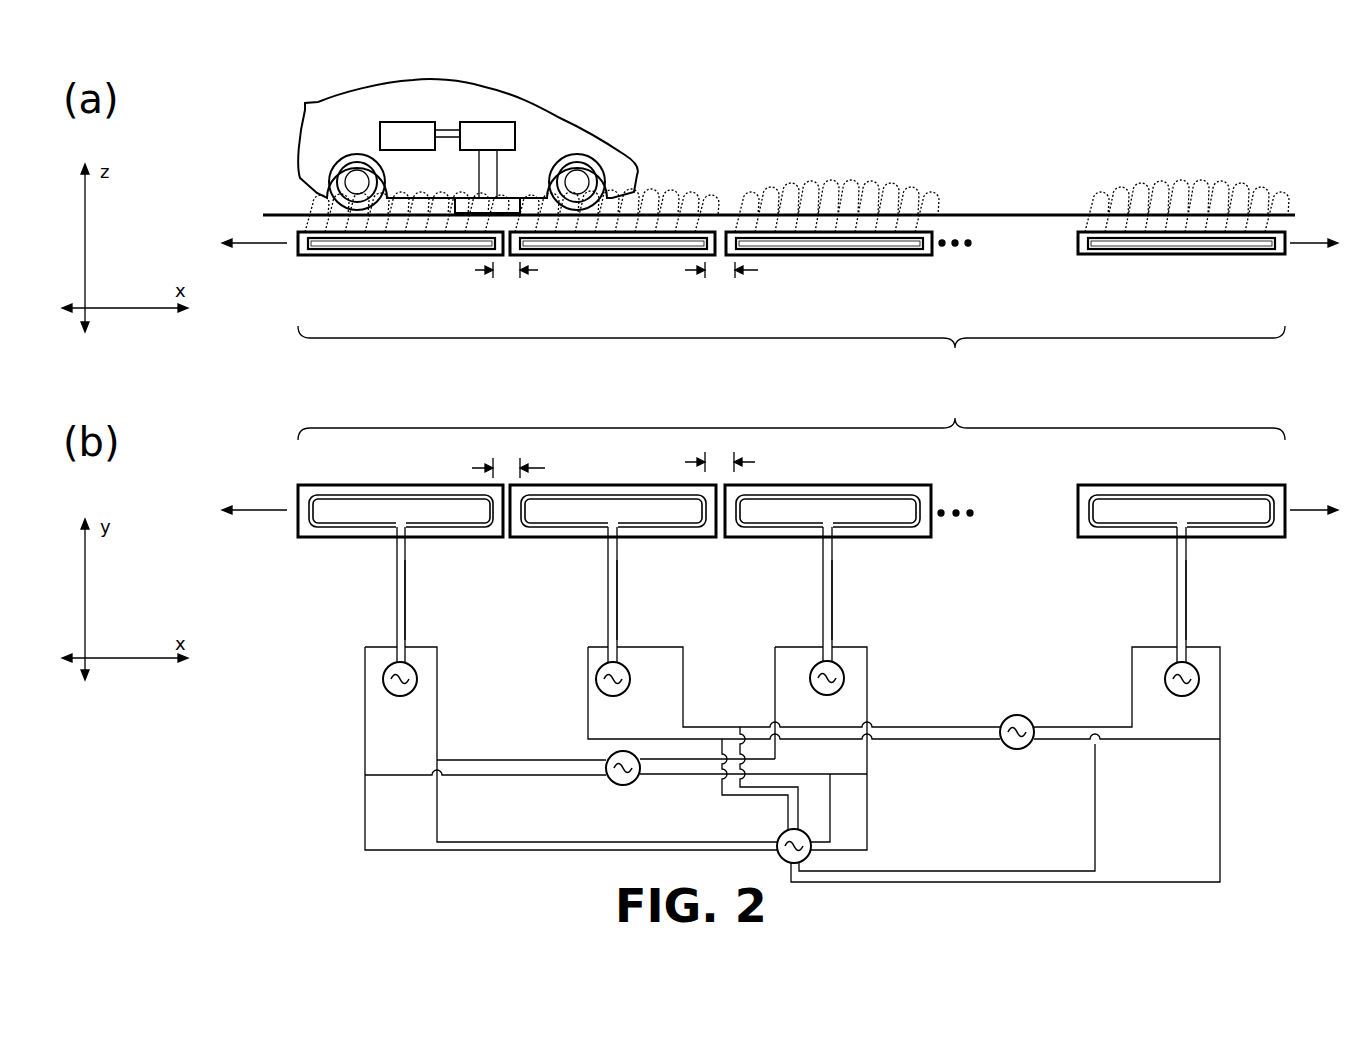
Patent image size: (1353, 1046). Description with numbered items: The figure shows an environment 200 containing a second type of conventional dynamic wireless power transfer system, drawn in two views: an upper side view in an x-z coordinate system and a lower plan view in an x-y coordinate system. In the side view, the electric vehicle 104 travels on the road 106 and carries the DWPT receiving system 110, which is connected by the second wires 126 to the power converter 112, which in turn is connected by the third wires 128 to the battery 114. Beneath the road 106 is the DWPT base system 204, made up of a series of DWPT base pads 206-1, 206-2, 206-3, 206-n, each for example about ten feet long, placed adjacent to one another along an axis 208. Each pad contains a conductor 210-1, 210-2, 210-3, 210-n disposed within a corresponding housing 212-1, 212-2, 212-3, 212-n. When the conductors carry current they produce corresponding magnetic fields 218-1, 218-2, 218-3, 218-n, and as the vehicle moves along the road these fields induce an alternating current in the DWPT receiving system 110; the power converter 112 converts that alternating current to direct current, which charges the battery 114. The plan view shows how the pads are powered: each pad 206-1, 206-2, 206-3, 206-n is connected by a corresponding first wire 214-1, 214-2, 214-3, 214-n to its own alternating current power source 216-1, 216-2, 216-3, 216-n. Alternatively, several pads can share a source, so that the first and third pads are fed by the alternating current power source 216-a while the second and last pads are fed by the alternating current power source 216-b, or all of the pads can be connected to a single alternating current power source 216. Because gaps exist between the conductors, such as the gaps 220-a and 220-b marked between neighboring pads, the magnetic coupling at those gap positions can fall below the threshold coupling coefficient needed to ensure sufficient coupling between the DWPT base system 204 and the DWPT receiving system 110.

The environment 200 is at (232, 27).
The electric vehicle 104 is at (482, 93).
The road 106 is at (985, 215).
The DWPT receiving system 110 is at (456, 200).
The power converter 112 is at (487, 136).
The battery 114 is at (407, 136).
The second wires 126 is at (497, 172).
The third wires 128 is at (445, 128).
The DWPT base system 204 is at (791, 383).
The DWPT base pad 206-1 is at (435, 266).
The DWPT base pad 206-2 is at (660, 266).
The DWPT base pad 206-3 is at (910, 266).
The DWPT base pad 206-n is at (1202, 266).
The axis 208 is at (256, 511).
The conductor 210-1 is at (378, 528).
The conductor 210-2 is at (578, 526).
The conductor 210-3 is at (794, 526).
The conductor 210-n is at (1144, 526).
The housing 212-1 is at (300, 538).
The housing 212-2 is at (545, 538).
The housing 212-3 is at (757, 538).
The housing 212-n is at (1084, 538).
The first wire 214-1 is at (407, 622).
The first wire 214-2 is at (619, 622).
The first wire 214-3 is at (834, 622).
The first wire 214-n is at (1188, 622).
The alternating current power source 216 is at (783, 833).
The alternating current power source 216-1 is at (400, 697).
The alternating current power source 216-2 is at (613, 697).
The alternating current power source 216-3 is at (810, 675).
The alternating current power source 216-n is at (1182, 697).
The alternating current power source 216-a is at (623, 786).
The alternating current power source 216-b is at (1022, 716).
The magnetic field 218-1 is at (294, 196).
The magnetic field 218-2 is at (697, 184).
The magnetic field 218-3 is at (902, 182).
The magnetic field 218-n is at (1296, 177).
The gap 220-a is at (522, 466).
The gap 220-b is at (740, 462).